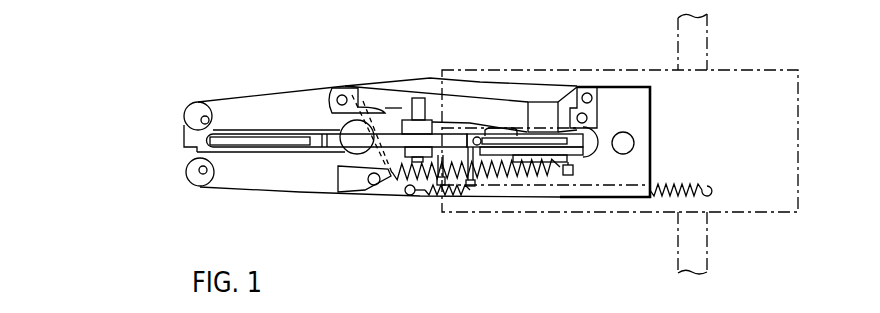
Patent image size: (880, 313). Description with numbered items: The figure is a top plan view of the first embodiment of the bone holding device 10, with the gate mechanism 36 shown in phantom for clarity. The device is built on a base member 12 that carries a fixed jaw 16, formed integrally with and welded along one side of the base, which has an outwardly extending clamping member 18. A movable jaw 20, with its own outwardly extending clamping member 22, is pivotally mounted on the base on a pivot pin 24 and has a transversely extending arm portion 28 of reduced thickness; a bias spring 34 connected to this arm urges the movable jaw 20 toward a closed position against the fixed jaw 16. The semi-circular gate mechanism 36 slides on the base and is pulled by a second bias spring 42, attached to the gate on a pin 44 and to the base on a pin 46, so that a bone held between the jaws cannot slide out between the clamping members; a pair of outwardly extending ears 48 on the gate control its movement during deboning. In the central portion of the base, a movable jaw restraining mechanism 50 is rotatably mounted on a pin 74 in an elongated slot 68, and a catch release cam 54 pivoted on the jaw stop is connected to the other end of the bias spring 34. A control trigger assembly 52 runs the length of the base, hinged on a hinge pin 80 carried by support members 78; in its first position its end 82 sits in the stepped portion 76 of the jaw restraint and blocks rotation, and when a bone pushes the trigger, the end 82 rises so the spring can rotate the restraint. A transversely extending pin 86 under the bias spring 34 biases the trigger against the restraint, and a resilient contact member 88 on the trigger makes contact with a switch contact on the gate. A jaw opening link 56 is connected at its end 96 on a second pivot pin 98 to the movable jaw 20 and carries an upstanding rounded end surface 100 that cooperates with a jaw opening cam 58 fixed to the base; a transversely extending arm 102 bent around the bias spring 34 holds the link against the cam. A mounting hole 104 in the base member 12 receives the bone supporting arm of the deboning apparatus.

The bone holding device 10 is at (146, 110).
The base member 12 is at (630, 186).
The fixed jaw 16 is at (235, 180).
The clamping member 18 is at (183, 175).
The movable jaw 20 is at (243, 108).
The clamping member 22 is at (191, 108).
The pivot pin 24 is at (362, 128).
The arm portion 28 is at (368, 187).
The bias spring 34 is at (495, 170).
The gate mechanism 36 is at (778, 88).
The second bias spring 42 is at (667, 186).
The pin 44 is at (713, 188).
The pin 46 is at (405, 194).
The ears 48 is at (700, 56).
The movable jaw restraining mechanism 50 is at (588, 137).
The control trigger assembly 52 is at (282, 138).
The catch release cam 54 is at (575, 160).
The jaw opening link 56 is at (491, 110).
The jaw opening cam 58 is at (556, 122).
The elongated slot 68 is at (598, 134).
The pin 74 is at (572, 176).
The stepped portion 76 is at (518, 130).
The support members 78 is at (428, 126).
The hinge pin 80 is at (418, 98).
The trigger end 82 is at (505, 156).
The transversely extending pin 86 is at (473, 188).
The resilient contact member 88 is at (552, 144).
The link end 96 is at (337, 90).
The second pivot pin 98 is at (344, 95).
The rounded end surface 100 is at (547, 112).
The transversely extending arm 102 is at (440, 198).
The mounting hole 104 is at (687, 138).